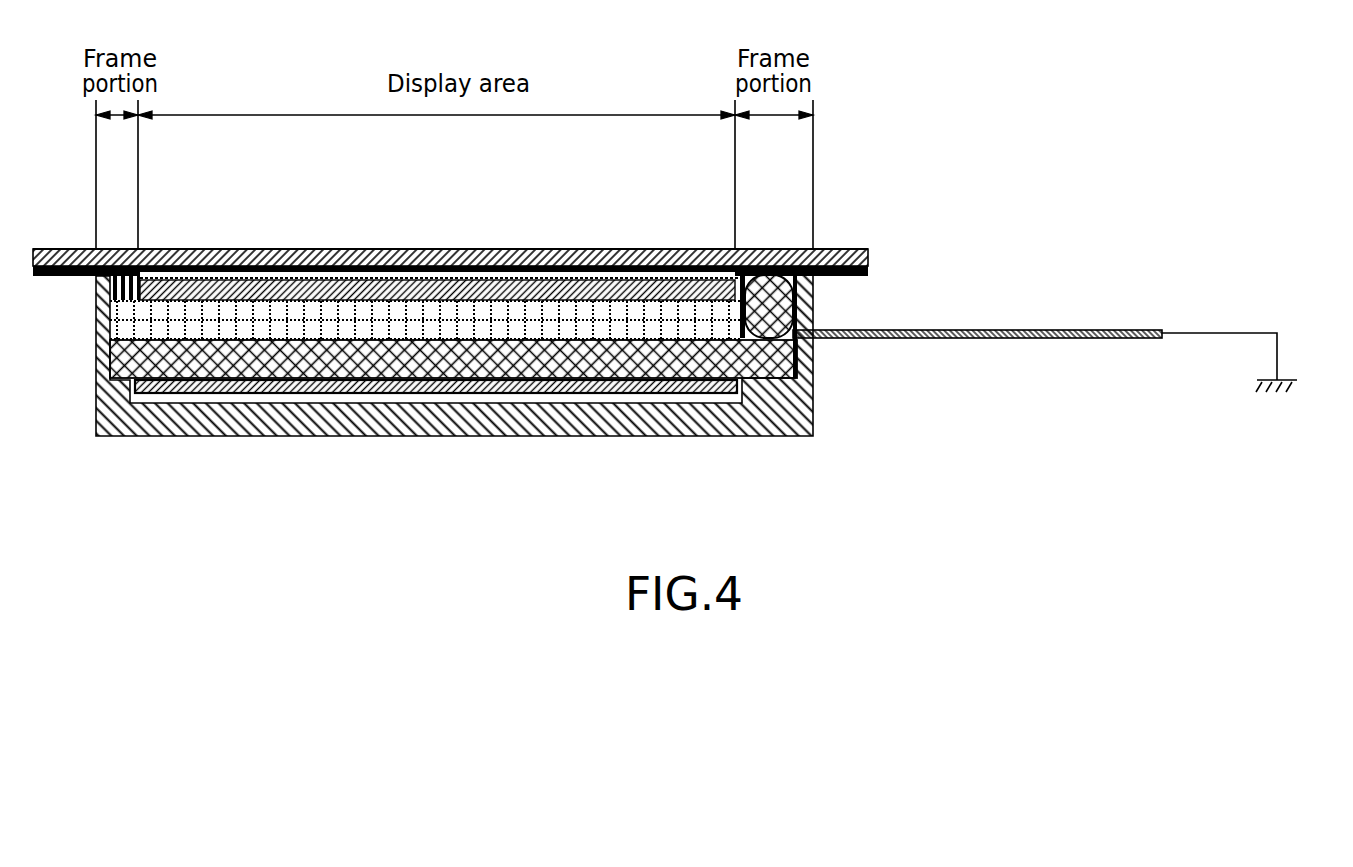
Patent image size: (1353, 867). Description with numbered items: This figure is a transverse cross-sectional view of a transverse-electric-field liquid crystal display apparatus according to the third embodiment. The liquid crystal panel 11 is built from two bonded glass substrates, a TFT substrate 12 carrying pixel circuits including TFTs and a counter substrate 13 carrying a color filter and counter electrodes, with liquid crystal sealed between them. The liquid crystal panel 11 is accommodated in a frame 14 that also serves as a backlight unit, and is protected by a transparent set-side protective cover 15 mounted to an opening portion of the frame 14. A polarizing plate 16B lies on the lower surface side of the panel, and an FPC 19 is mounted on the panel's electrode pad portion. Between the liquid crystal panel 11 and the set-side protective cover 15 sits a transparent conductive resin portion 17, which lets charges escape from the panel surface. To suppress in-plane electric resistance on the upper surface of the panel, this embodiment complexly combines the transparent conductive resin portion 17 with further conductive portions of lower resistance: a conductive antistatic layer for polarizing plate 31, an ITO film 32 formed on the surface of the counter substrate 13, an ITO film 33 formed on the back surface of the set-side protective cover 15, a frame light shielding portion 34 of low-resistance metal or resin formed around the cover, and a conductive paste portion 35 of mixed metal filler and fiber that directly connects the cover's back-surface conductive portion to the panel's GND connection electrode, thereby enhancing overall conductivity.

The liquid crystal panel 11 is at (530, 403).
The TFT substrate 12 is at (365, 360).
The counter substrate 13 is at (580, 320).
The frame 14 is at (805, 410).
The set-side protective cover 15 is at (392, 240).
The polarizing plate 16B is at (710, 390).
The transparent conductive resin portion 17 is at (797, 286).
The FPC (Flexible Printed Circuit) 19 is at (1138, 330).
The antistatic layer for polarizing plate 31 is at (176, 249).
The ITO film 32 is at (494, 249).
The ITO film 33 is at (570, 280).
The frame light shielding portion 34 is at (842, 249).
The conductive paste portion 35 is at (800, 350).